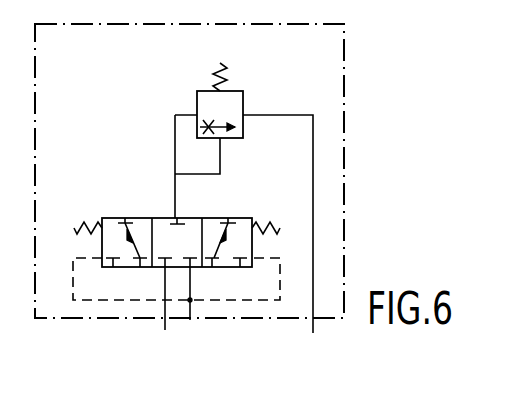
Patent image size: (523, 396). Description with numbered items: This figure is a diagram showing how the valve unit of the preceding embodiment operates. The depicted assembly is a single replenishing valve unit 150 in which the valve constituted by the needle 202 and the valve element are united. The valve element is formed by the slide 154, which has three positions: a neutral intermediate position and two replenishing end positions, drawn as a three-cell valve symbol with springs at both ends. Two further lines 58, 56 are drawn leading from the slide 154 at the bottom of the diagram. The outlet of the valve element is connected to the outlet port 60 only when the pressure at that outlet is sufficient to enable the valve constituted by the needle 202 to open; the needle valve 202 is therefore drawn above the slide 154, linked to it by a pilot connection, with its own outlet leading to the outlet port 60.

The replenishing valve unit 150 is at (345, 114).
The outlet port 60 is at (315, 218).
The needle 202 is at (245, 97).
The slide 154 is at (104, 217).
The first port line 58 is at (163, 322).
The second port line 56 is at (191, 318).